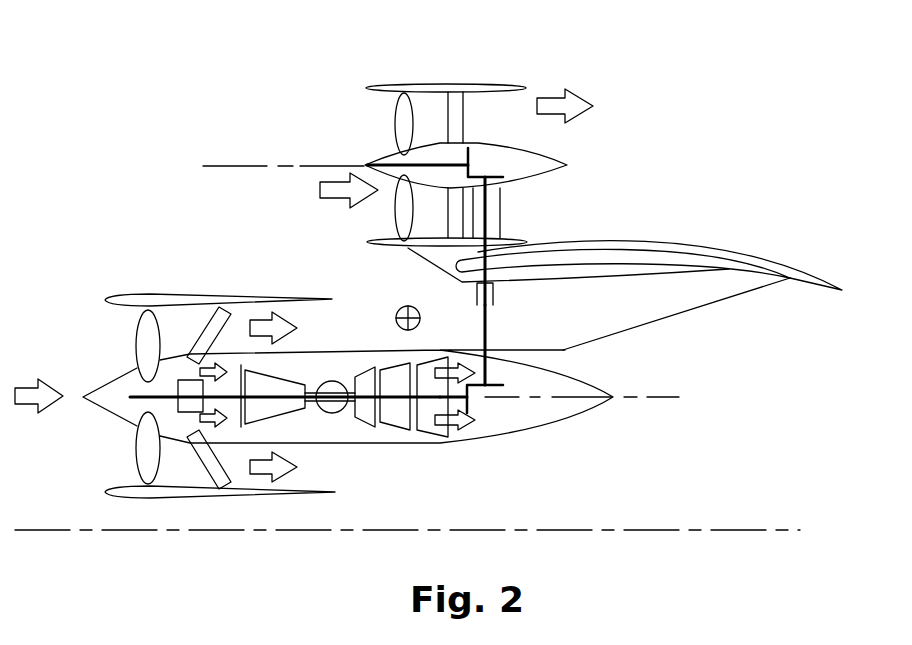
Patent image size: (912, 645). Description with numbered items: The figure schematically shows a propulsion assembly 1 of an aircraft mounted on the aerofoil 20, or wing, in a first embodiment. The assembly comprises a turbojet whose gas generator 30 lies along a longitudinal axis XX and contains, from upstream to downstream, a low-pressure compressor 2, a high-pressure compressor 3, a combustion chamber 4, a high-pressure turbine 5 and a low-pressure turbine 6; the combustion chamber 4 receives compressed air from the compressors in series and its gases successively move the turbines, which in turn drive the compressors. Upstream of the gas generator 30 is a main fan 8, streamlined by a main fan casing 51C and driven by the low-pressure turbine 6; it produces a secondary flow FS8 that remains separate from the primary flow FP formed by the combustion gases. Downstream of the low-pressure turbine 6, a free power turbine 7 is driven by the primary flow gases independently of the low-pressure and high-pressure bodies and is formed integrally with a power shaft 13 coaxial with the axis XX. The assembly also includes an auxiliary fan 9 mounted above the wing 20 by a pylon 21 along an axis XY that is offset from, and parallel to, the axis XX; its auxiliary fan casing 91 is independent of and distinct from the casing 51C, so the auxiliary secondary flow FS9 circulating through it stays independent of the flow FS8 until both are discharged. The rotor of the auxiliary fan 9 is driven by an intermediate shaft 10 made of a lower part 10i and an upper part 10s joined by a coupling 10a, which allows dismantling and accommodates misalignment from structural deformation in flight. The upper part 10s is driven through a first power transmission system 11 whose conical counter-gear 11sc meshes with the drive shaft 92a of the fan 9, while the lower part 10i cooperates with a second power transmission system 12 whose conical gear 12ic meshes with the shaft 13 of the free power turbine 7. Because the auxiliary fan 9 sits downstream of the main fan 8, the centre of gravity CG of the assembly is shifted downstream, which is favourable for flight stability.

The propulsion assembly 1 is at (300, 146).
The low-pressure compressor 2 is at (227, 415).
The high-pressure compressor 3 is at (291, 405).
The combustion chamber 4 is at (333, 407).
The high-pressure turbine 5 is at (362, 417).
The low-pressure turbine 6 is at (395, 418).
The free power turbine 7 is at (423, 427).
The main fan 8 is at (137, 462).
The auxiliary fan 9 is at (396, 156).
The intermediate shaft 10 is at (503, 298).
The coupling 10a is at (475, 318).
The lower part of the intermediate shaft 10i is at (486, 330).
The upper part of the intermediate shaft 10s is at (487, 208).
The first power transmission system 11 is at (551, 152).
The conical counter-gear 11sc is at (493, 173).
The second power transmission system 12 is at (551, 434).
The conical gear 12ic is at (495, 385).
The power shaft 13 is at (470, 400).
The aerofoil 20 is at (753, 241).
The pylon 21 is at (570, 242).
The gas generator 30 is at (363, 500).
The main fan casing 51C is at (163, 495).
The auxiliary fan casing 91 is at (390, 87).
The drive shaft of the fan 92a is at (428, 163).
The axis of the auxiliary fan XY is at (238, 165).
The longitudinal axis XX is at (653, 397).
The centre of gravity CG is at (396, 313).
The secondary flow of the main fan FS8 is at (280, 470).
The auxiliary secondary flow FS9 is at (577, 108).
The primary flow FP is at (463, 432).